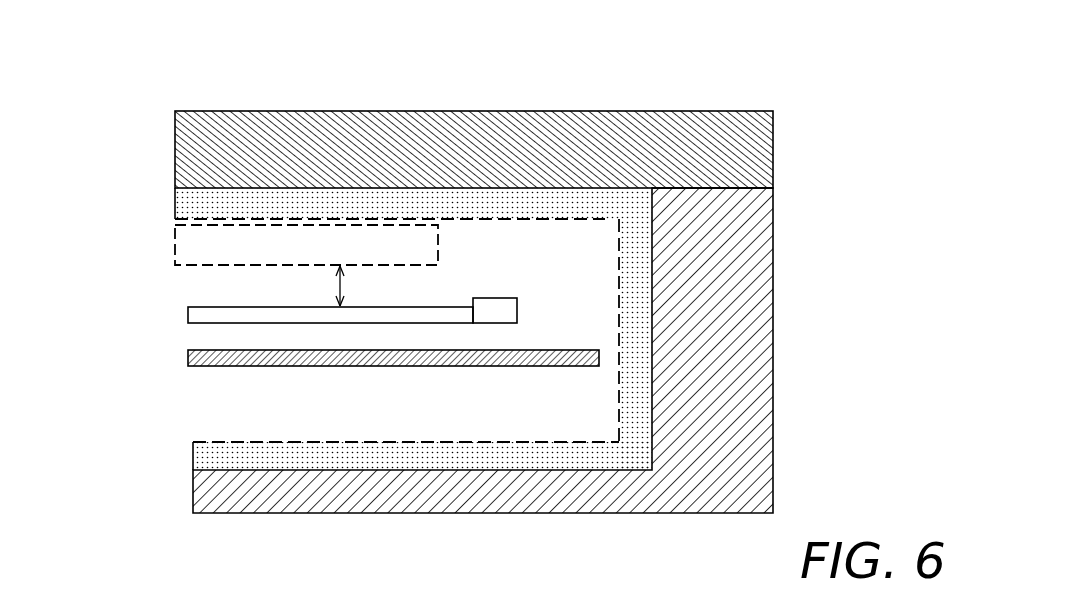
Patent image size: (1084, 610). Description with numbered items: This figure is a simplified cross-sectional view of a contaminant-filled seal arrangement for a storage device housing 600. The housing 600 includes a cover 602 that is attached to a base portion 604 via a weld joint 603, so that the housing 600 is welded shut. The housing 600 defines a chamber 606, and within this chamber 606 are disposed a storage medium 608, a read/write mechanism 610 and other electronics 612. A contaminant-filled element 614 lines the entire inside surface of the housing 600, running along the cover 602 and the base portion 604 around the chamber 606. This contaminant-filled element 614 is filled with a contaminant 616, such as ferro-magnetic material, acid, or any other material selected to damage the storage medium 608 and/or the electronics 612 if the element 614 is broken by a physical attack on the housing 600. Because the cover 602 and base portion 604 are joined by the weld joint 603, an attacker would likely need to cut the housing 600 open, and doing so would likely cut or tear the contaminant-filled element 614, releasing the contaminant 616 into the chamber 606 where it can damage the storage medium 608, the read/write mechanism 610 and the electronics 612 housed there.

The storage device housing 600 is at (828, 56).
The cover 602 is at (246, 110).
The weld joint 603 is at (773, 202).
The base portion 604 is at (773, 343).
The chamber 606 is at (114, 362).
The storage medium 608 is at (350, 367).
The read/write mechanism 610 is at (291, 301).
The electronics 612 is at (176, 246).
The contaminant-filled element 614 is at (176, 207).
The contaminant 616 is at (196, 455).